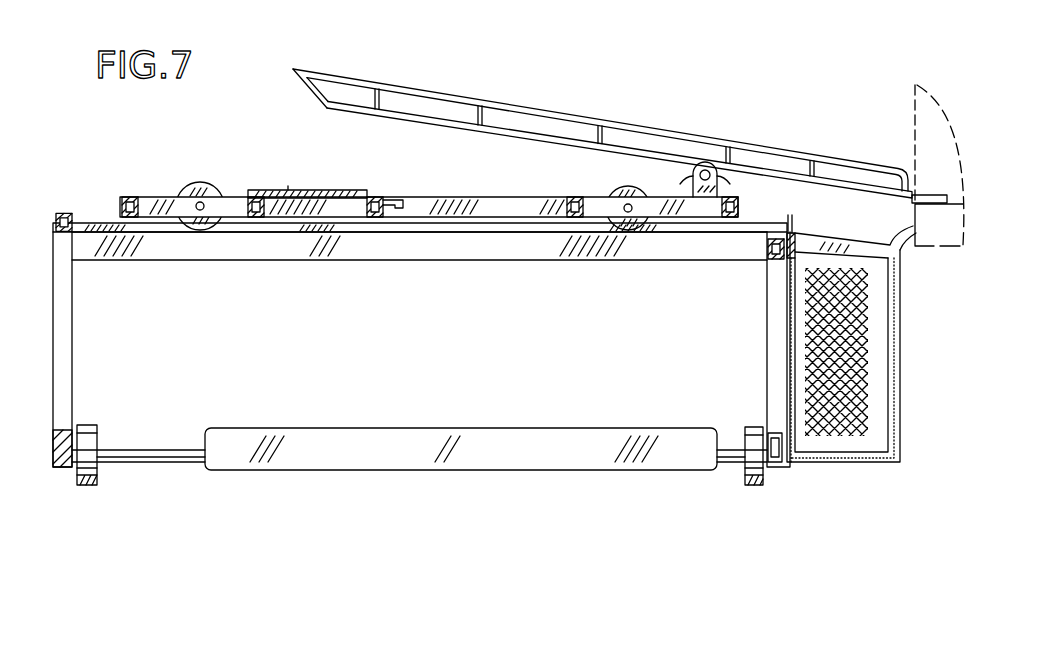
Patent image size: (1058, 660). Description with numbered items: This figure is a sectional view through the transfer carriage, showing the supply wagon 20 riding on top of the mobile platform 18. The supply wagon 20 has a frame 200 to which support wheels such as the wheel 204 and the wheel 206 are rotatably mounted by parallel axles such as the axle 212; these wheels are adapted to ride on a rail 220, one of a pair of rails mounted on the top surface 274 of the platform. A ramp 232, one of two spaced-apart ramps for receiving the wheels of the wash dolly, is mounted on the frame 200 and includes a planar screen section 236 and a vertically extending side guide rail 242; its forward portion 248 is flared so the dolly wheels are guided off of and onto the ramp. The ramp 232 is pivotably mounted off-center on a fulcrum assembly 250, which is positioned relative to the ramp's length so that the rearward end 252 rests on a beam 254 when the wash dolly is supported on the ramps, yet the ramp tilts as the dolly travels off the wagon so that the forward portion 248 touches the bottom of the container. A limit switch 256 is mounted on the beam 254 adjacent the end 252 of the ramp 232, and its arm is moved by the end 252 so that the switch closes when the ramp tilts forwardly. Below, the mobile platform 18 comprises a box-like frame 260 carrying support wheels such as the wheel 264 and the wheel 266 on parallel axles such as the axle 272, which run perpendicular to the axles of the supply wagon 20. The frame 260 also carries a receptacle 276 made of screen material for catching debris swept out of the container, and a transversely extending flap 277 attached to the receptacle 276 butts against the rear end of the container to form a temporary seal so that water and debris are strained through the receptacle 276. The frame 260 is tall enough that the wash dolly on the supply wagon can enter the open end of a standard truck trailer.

The mobile platform 18 is at (419, 471).
The supply wagon 20 is at (591, 108).
The frame 200 is at (487, 198).
The support wheel 204 is at (183, 190).
The support wheel 206 is at (612, 190).
The axle 212 is at (200, 202).
The rail 220 is at (85, 228).
The ramp 232 is at (431, 84).
The planar screen section 236 is at (560, 133).
The side guide rail 242 is at (525, 107).
The forward portion 248 is at (943, 195).
The fulcrum assembly 250 is at (706, 168).
The rearward end 252 is at (322, 99).
The beam 254 is at (385, 198).
The limit switch 256 is at (395, 204).
The box-like frame 260 is at (385, 471).
The support wheel 264 is at (89, 486).
The support wheel 266 is at (752, 486).
The axle 272 is at (158, 450).
The top surface 274 is at (100, 240).
The receptacle 276 is at (900, 365).
The flap 277 is at (905, 235).